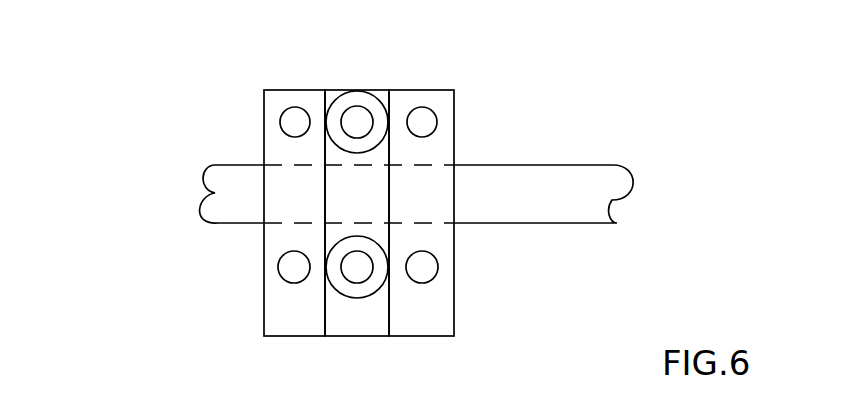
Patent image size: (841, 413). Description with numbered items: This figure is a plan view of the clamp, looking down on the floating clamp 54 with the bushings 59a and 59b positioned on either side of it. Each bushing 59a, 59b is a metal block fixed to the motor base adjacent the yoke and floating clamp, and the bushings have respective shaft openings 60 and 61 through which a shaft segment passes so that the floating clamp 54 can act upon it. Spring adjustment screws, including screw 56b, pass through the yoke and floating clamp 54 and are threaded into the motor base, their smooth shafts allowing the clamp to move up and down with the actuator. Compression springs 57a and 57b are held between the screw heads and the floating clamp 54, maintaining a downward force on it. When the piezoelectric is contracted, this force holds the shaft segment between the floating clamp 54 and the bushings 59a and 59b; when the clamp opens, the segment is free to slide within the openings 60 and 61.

The floating clamp 54 is at (372, 205).
The spring adjustment screw 56b is at (350, 115).
The compression spring 57a is at (358, 97).
The compression spring 57b is at (352, 290).
The bushing 59a is at (288, 90).
The bushing 59b is at (454, 312).
The shaft opening 60 is at (264, 165).
The shaft opening 61 is at (454, 165).